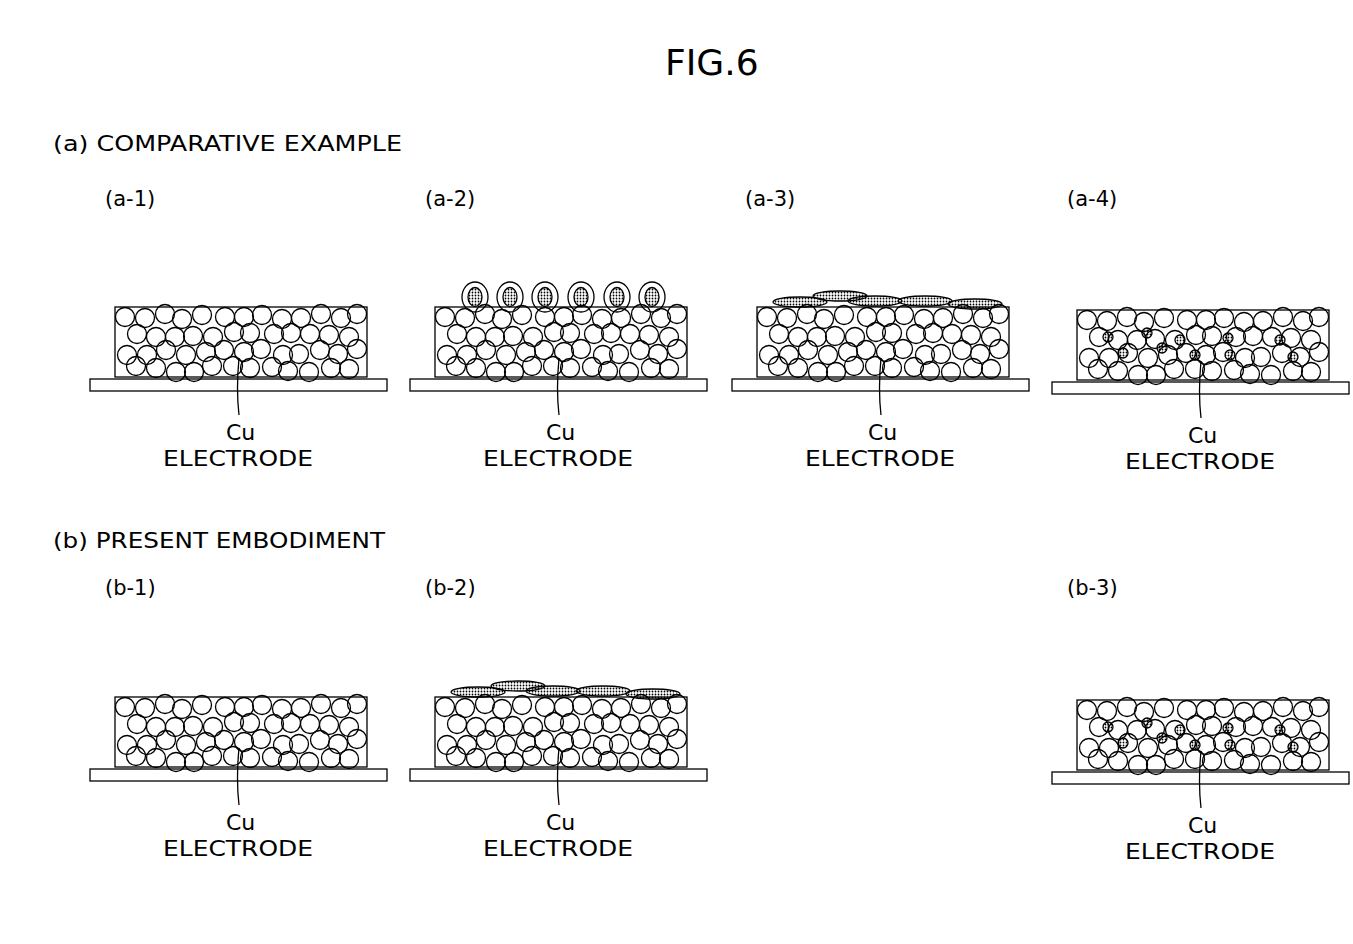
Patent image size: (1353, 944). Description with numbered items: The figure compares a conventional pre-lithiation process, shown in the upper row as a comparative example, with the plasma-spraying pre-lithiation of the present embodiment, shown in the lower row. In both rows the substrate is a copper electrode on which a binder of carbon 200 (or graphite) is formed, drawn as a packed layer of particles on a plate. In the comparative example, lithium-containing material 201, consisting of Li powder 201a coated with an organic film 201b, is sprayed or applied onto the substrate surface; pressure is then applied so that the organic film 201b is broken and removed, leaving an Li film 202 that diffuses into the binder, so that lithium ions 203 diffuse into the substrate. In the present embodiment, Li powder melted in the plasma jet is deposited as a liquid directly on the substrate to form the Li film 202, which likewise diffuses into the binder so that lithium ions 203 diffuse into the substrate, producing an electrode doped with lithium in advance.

The binder of carbon 200 is at (719, 585).
The lithium-containing material 201 is at (527, 267).
The Li powder 201a is at (466, 287).
The organic film 201b is at (508, 282).
The Li film 202 is at (925, 298).
The lithium ions 203 is at (1200, 503).